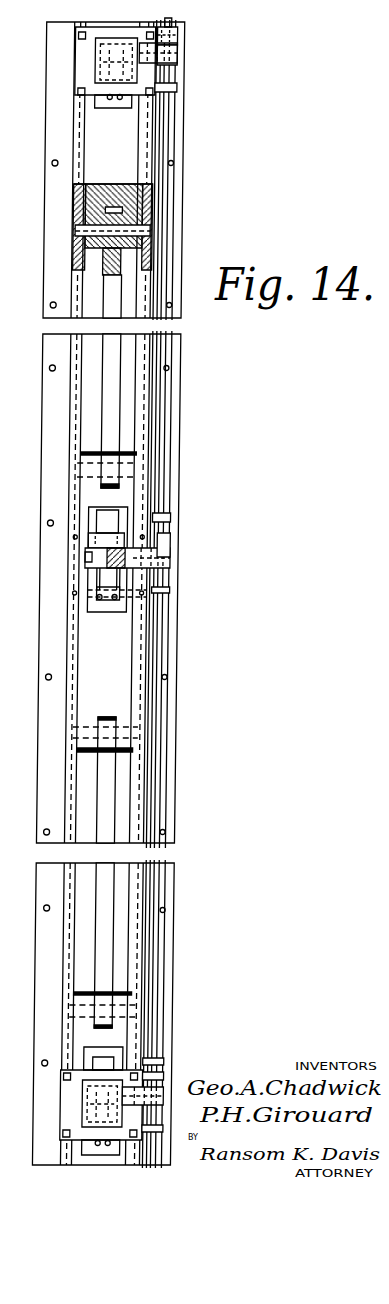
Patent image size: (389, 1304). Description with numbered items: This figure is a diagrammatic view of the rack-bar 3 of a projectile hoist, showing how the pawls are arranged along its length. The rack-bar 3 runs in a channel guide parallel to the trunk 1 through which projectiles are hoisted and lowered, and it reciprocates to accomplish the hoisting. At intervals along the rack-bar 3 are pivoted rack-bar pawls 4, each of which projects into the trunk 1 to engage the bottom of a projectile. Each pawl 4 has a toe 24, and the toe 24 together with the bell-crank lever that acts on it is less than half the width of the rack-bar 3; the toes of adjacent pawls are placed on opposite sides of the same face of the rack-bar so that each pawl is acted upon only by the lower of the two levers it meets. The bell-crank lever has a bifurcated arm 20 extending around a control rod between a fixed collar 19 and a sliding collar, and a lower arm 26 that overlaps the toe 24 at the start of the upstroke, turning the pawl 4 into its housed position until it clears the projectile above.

The trunk 1 is at (75, 568).
The rack-bar 3 is at (111, 295).
The rack-bar pawl 4 is at (111, 518).
The fixed collar 19 is at (178, 30).
The bifurcated arm 20 is at (176, 41).
The toe 24 is at (100, 600).
The lower arm 26 is at (107, 578).